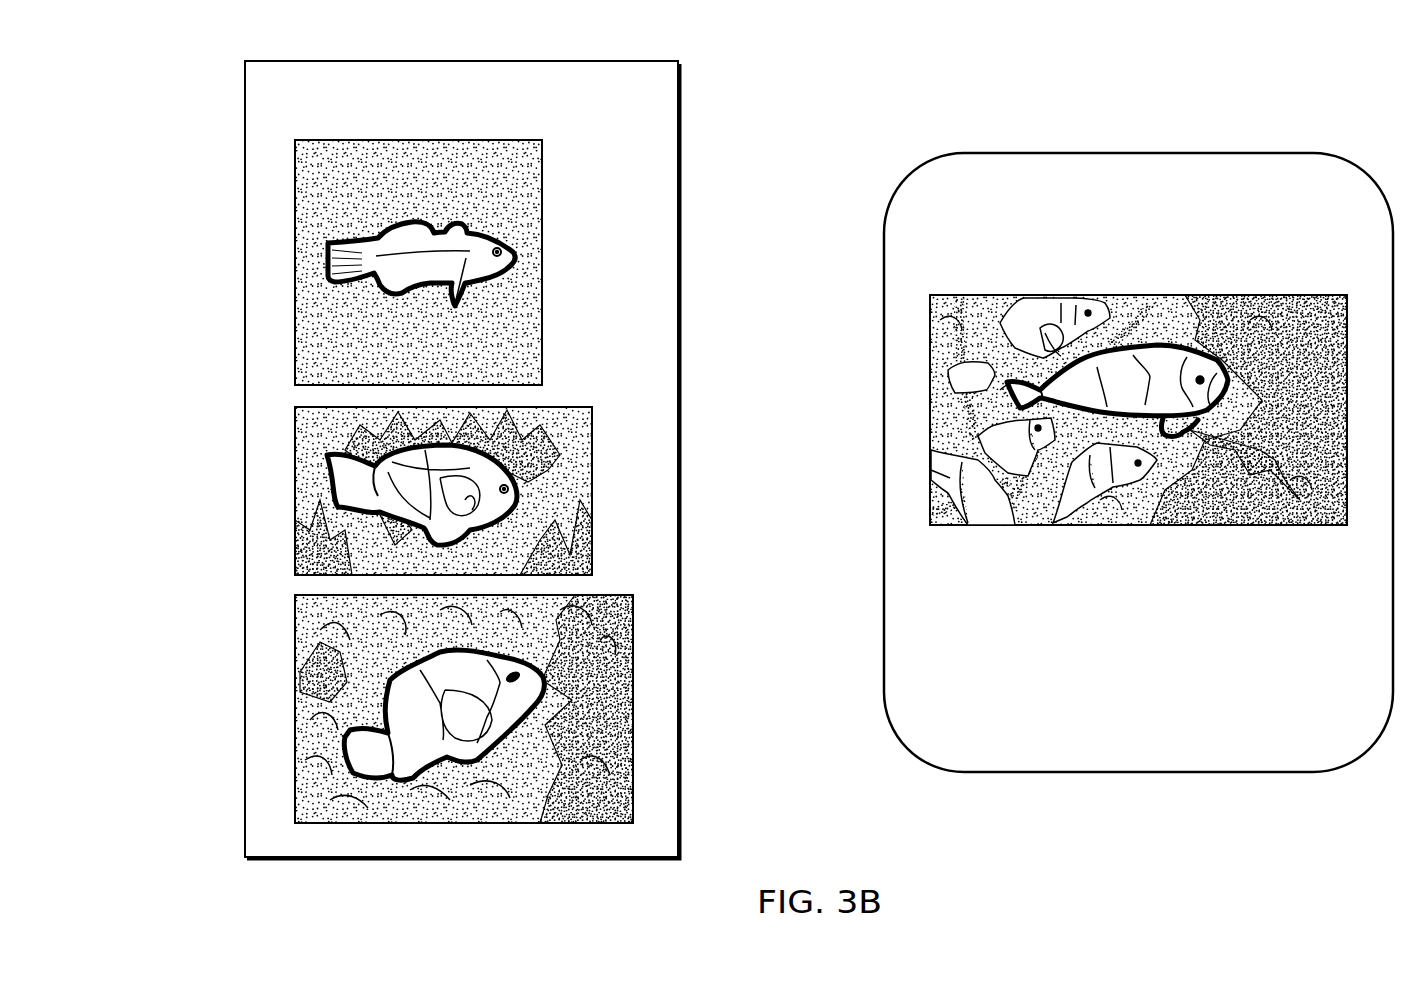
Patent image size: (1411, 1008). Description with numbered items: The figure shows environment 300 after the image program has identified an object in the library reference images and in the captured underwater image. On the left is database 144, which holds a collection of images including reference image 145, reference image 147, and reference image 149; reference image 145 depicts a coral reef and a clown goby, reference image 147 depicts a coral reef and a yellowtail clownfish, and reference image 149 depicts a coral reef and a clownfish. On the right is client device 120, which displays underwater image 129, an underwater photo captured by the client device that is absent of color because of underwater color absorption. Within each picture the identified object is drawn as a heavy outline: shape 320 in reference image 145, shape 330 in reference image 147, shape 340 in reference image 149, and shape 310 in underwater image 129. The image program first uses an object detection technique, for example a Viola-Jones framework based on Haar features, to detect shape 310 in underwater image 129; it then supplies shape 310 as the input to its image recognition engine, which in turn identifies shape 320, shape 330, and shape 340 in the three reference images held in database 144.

The environment 300 is at (1252, 52).
The database 144 is at (551, 109).
The reference image 145 is at (295, 218).
The reference image 147 is at (295, 458).
The reference image 149 is at (295, 640).
The shape 320 is at (517, 255).
The shape 330 is at (525, 493).
The shape 340 is at (570, 650).
The client device 120 is at (1253, 206).
The underwater image 129 is at (930, 356).
The shape 310 is at (1272, 355).